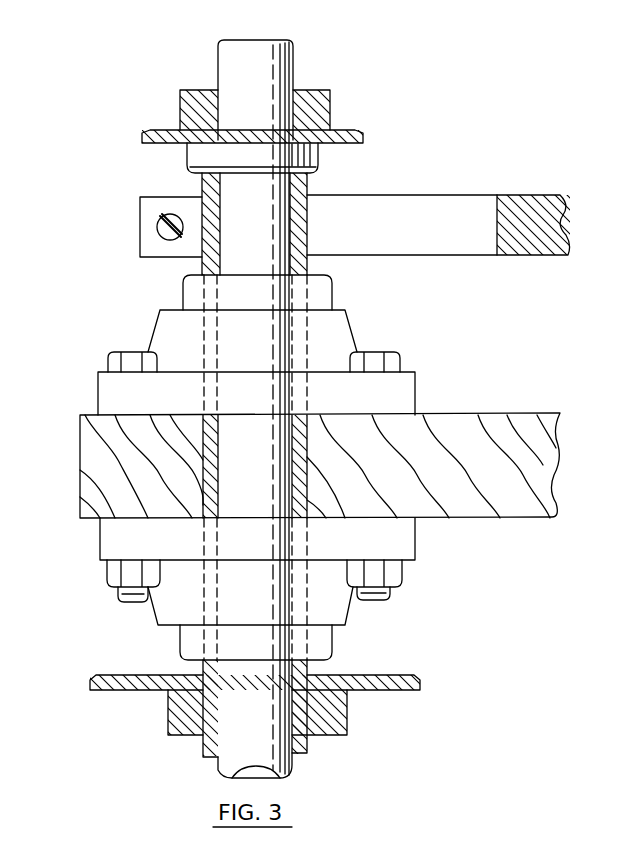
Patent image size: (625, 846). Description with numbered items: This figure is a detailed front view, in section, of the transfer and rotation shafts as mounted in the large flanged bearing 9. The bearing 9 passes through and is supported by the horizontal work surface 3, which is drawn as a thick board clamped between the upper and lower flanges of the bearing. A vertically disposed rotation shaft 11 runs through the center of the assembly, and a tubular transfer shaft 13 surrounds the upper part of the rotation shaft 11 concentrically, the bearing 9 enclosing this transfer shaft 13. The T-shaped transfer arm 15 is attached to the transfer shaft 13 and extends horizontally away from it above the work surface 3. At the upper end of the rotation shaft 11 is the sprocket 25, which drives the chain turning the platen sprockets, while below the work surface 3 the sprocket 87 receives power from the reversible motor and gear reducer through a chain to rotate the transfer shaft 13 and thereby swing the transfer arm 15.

The work surface 3 is at (442, 413).
The flanged bearing 9 is at (160, 313).
The rotation shaft 11 is at (293, 63).
The transfer shaft 13 is at (205, 262).
The transfer arm 15 is at (417, 195).
The sprocket 25 is at (330, 110).
The sprocket 87 is at (370, 673).